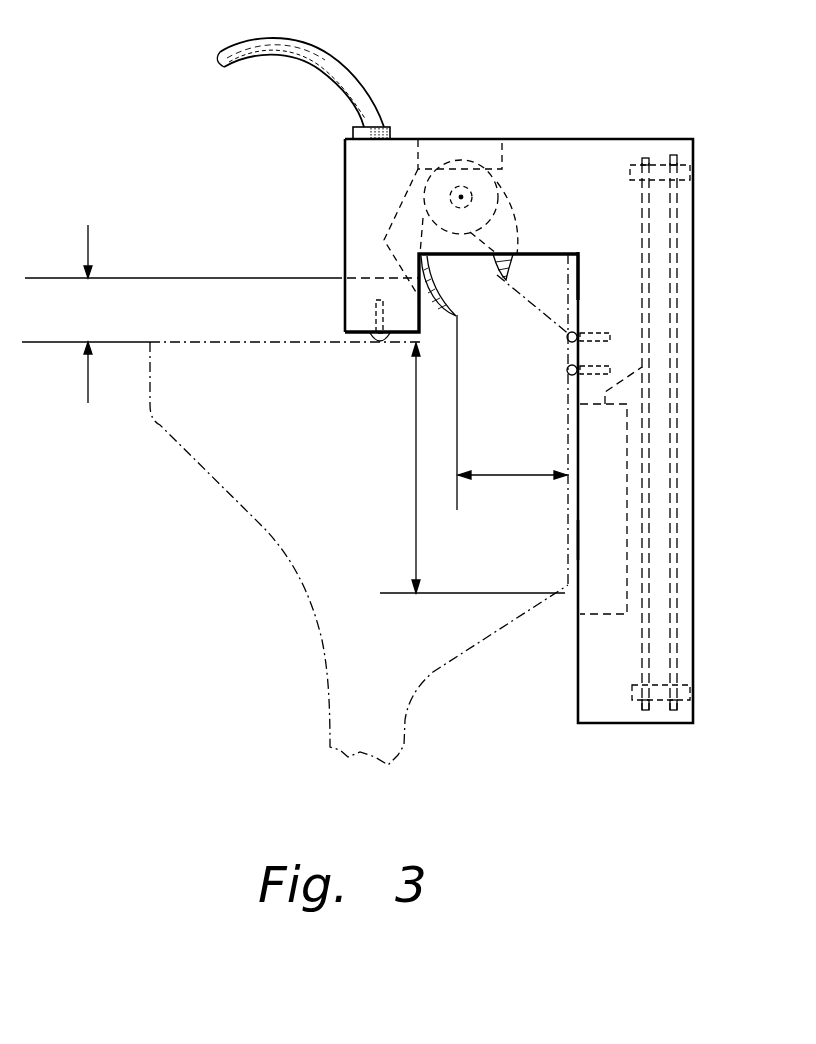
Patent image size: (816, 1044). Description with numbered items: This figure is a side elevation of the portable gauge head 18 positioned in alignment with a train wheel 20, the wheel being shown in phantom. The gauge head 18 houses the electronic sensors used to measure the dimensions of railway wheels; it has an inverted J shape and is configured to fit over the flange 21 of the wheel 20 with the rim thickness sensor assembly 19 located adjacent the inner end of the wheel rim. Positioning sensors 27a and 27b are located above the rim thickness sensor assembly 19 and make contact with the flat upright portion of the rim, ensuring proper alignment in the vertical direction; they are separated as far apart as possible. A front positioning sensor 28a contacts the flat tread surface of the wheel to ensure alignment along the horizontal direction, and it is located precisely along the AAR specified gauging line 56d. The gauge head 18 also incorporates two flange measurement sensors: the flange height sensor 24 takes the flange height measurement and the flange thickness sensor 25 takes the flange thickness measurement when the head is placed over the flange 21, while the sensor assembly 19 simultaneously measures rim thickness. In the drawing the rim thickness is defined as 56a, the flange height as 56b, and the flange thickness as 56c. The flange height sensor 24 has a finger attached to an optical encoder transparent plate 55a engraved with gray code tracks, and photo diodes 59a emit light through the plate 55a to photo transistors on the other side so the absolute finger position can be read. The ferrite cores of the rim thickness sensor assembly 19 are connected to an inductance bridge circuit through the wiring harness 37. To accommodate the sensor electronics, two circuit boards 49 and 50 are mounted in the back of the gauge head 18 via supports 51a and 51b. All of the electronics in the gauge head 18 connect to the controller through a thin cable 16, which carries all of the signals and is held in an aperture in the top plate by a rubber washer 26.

The cable 16 is at (342, 57).
The gauge head 18 is at (578, 657).
The rim thickness sensor assembly 19 is at (590, 533).
The train wheel 20 is at (340, 657).
The flange 21 is at (497, 300).
The flange height sensor 24 is at (517, 232).
The flange thickness sensor 25 is at (437, 296).
The rubber washer 26 is at (353, 133).
The positioning sensor 27a is at (567, 338).
The positioning sensor 27b is at (566, 372).
The positioning sensor 28a is at (372, 342).
The wiring harness 37 is at (600, 395).
The circuit board 49 is at (677, 230).
The circuit board 50 is at (642, 230).
The support 51a is at (685, 693).
The support 51b is at (685, 172).
The optical encoder transparent plate 55a is at (462, 182).
The rim thickness 56a is at (472, 468).
The flange height 56b is at (221, 332).
The flange thickness 56c is at (512, 419).
The gauging line 56d is at (380, 345).
The photo diodes 59a is at (422, 152).